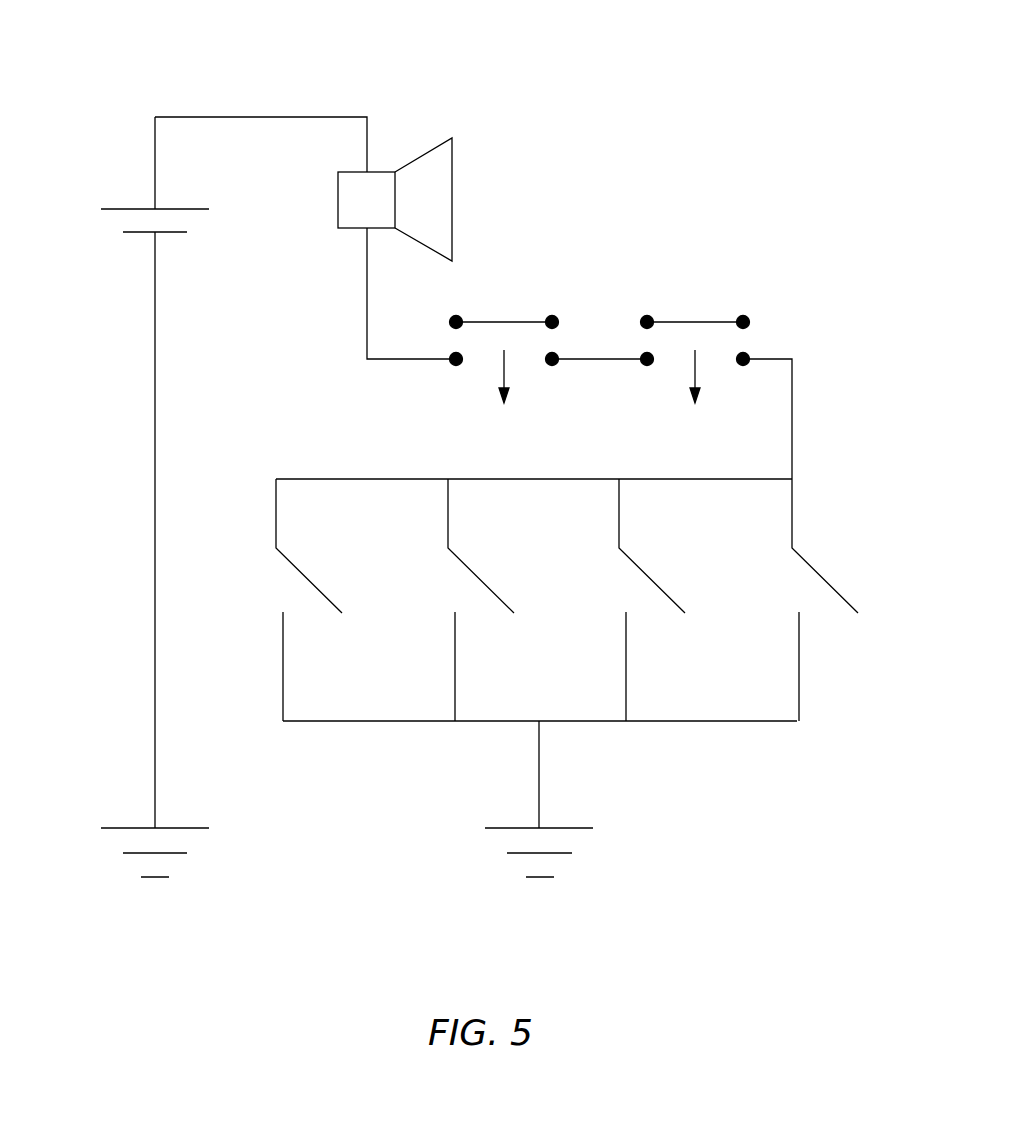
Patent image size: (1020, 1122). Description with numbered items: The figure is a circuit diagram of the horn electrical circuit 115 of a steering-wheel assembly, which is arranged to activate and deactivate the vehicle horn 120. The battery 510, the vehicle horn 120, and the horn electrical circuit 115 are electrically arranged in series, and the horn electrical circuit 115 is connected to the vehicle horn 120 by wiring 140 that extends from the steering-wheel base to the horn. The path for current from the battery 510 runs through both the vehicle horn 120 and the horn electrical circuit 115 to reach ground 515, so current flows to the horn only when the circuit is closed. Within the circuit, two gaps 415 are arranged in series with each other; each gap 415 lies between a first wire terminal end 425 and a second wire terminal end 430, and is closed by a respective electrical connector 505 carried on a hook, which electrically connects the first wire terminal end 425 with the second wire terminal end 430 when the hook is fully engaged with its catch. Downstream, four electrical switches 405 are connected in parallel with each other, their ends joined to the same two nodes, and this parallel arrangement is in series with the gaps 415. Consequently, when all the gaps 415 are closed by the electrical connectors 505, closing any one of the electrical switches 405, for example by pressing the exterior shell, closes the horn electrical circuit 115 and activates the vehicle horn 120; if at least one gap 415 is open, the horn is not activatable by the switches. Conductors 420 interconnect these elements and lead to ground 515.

The horn electrical circuit 115 is at (758, 71).
The vehicle horn 120 is at (420, 153).
The wiring 140 is at (366, 302).
The electrical switch 405 is at (313, 578).
The gap 415 is at (480, 357).
The conductor wire 420 is at (597, 357).
The first wire terminal end 425 is at (455, 367).
The second wire terminal end 430 is at (553, 367).
The electrical connector 505 is at (503, 322).
The battery 510 is at (130, 207).
The ground 515 is at (130, 826).